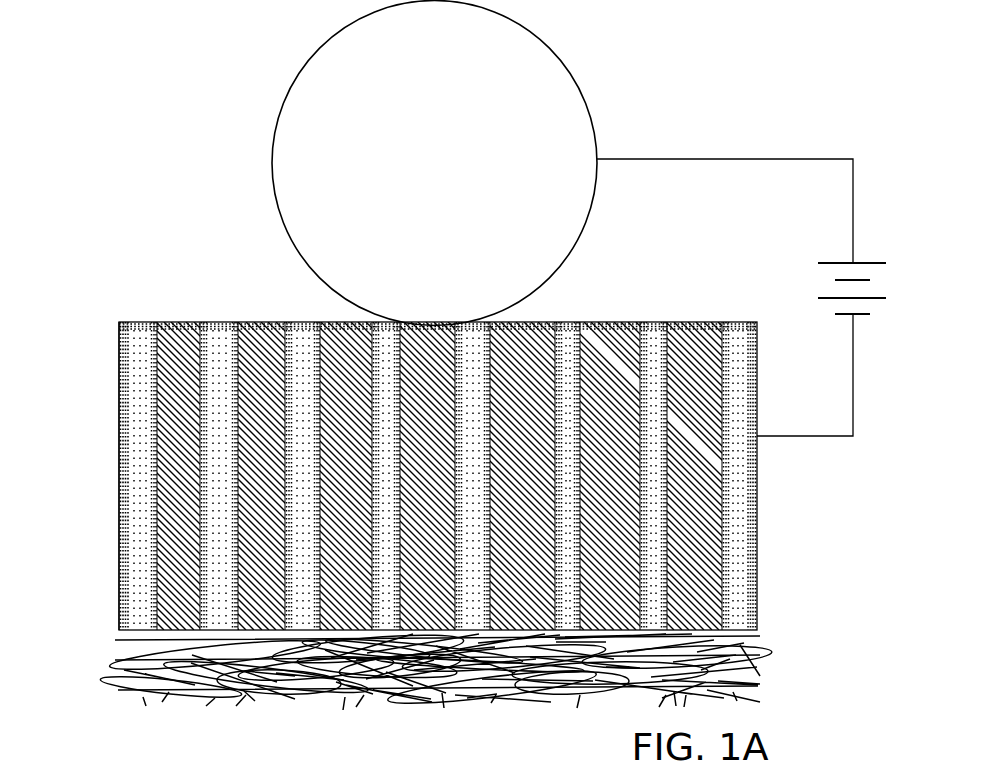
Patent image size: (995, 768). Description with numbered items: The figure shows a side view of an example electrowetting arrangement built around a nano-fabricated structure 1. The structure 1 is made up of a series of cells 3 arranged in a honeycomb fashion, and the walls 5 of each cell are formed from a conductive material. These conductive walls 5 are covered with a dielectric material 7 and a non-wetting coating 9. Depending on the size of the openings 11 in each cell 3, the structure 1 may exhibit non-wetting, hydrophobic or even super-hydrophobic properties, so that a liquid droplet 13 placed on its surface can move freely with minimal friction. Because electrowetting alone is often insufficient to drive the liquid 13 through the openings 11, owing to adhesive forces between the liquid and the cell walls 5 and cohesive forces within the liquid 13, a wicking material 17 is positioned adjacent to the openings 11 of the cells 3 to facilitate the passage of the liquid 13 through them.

The nano-fabricated structure 1 is at (82, 409).
The cells 3 is at (178, 322).
The walls 5 is at (135, 572).
The dielectric material 7 is at (122, 332).
The non-wetting coating 9 is at (118, 385).
The openings 11 is at (155, 462).
The liquid droplet 13 is at (552, 78).
The wicking material 17 is at (185, 700).